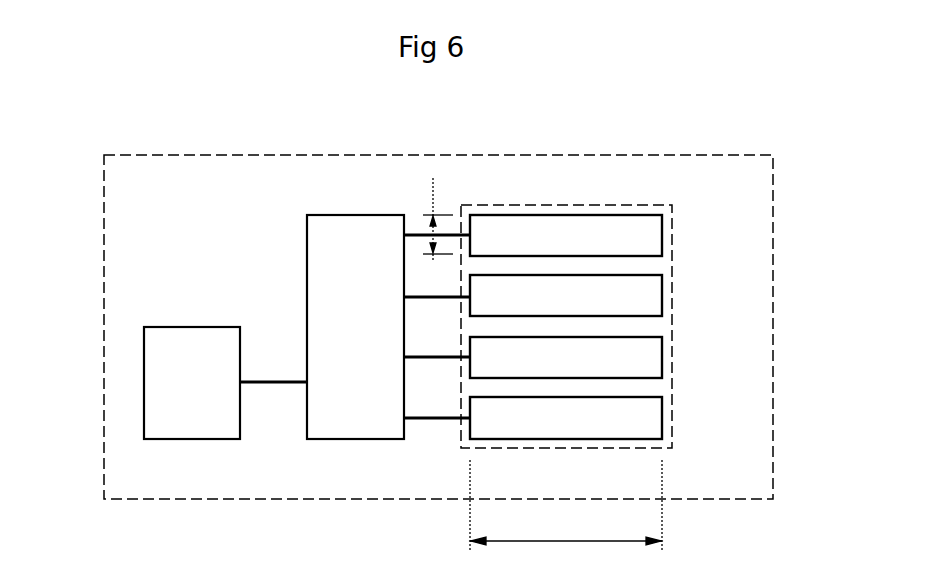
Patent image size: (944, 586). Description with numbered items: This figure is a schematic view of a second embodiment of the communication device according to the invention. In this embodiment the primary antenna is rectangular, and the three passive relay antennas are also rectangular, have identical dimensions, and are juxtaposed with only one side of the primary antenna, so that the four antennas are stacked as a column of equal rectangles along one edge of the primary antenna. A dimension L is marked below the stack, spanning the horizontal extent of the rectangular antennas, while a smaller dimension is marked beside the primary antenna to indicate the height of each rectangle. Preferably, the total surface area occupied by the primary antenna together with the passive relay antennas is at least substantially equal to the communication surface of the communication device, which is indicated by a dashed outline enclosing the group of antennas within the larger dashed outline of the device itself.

The antenna length L is at (566, 506).